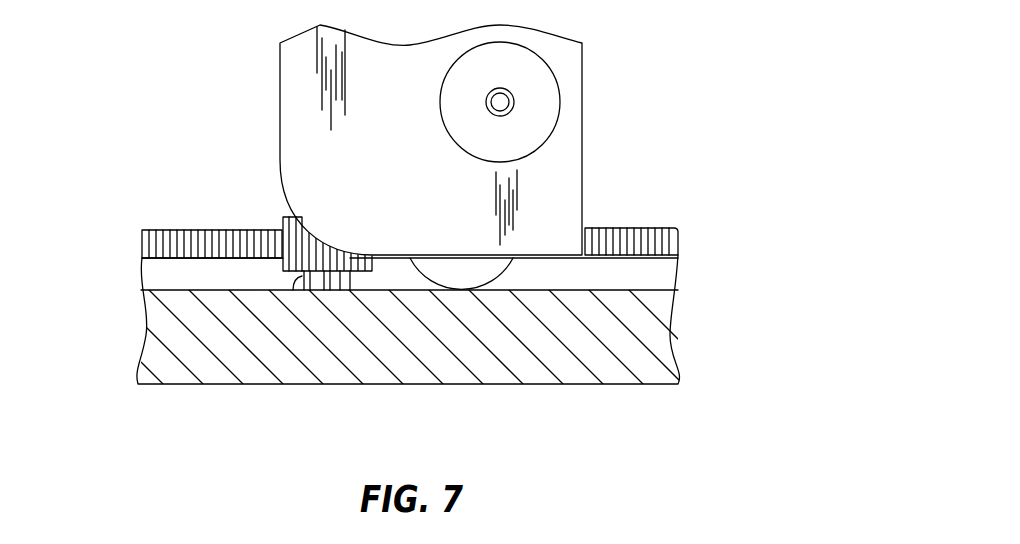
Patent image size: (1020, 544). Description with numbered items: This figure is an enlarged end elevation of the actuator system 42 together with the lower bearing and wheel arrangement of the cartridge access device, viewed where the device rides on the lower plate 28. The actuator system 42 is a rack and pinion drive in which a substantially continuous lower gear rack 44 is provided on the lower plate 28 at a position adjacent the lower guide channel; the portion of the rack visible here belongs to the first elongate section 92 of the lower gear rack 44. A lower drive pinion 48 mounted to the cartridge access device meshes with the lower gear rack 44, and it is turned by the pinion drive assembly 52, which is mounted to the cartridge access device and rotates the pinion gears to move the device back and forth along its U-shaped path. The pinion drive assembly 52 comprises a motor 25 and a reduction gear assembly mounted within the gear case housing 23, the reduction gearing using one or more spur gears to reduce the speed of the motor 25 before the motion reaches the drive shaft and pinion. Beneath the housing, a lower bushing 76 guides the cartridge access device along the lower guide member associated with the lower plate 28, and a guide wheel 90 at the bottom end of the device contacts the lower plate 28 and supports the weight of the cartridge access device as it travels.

The actuator system 42 is at (152, 120).
The gear case housing 23 is at (280, 68).
The motor 25 is at (453, 140).
The pinion drive assembly 52 is at (568, 133).
The lower drive pinion 48 is at (285, 217).
The first elongate section of lower gear rack 92 is at (150, 230).
The lower gear rack 44 is at (690, 238).
The lower plate 28 is at (680, 335).
The lower bushing 76 is at (294, 292).
The guide wheel 90 is at (505, 268).